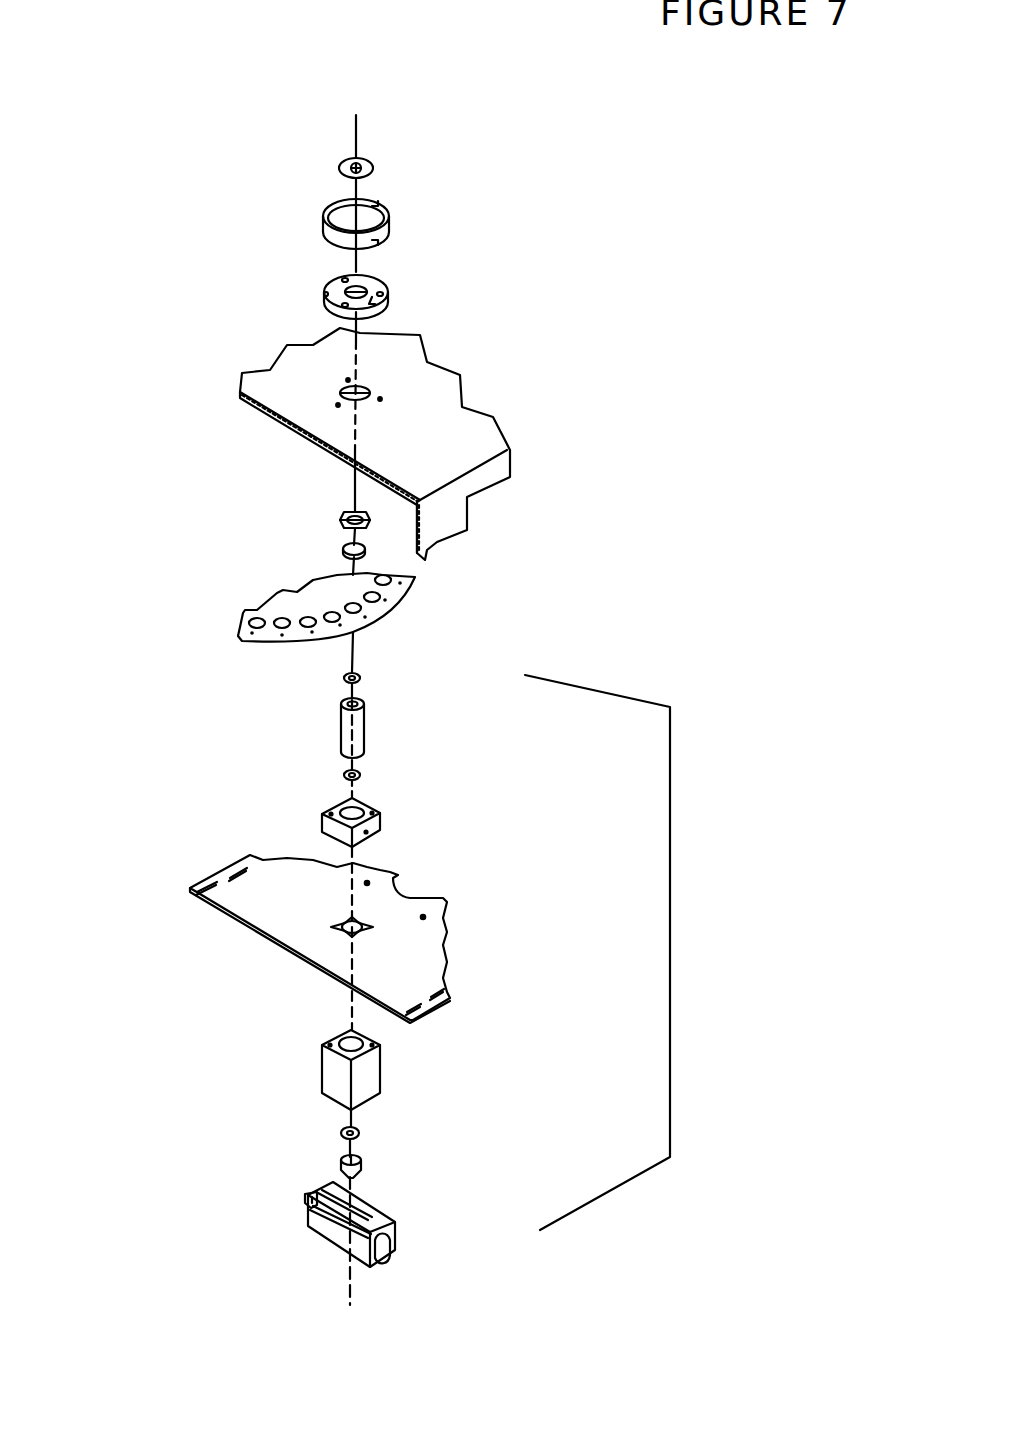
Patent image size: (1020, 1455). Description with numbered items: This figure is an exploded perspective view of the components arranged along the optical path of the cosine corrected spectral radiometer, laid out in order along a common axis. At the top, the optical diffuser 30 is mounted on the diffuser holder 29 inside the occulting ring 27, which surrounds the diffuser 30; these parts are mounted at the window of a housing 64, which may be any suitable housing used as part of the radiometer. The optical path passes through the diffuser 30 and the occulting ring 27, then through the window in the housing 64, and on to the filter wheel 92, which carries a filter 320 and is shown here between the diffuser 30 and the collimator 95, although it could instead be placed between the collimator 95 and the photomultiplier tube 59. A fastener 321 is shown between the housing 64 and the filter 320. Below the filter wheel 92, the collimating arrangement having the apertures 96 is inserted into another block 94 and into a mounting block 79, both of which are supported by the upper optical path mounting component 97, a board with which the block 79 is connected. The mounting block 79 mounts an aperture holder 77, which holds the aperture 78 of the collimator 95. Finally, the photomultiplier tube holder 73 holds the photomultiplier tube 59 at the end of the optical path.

The optical diffuser 30 is at (372, 163).
The occulting ring 27 is at (390, 227).
The diffuser holder 29 is at (388, 296).
The housing 64 is at (507, 438).
The nut 321 is at (345, 517).
The filter 320 is at (340, 548).
The filter wheel 92 is at (410, 597).
The apertures 96 is at (344, 680).
The block 94 is at (380, 820).
The upper optical path mounting component 97 is at (287, 953).
The mounting block 79 is at (380, 1073).
The aperture 78 is at (360, 1135).
The aperture holder 77 is at (360, 1167).
The photomultiplier tube holder 73 is at (305, 1220).
The photomultiplier tube 59 is at (310, 1197).
The collimator 95 is at (670, 882).